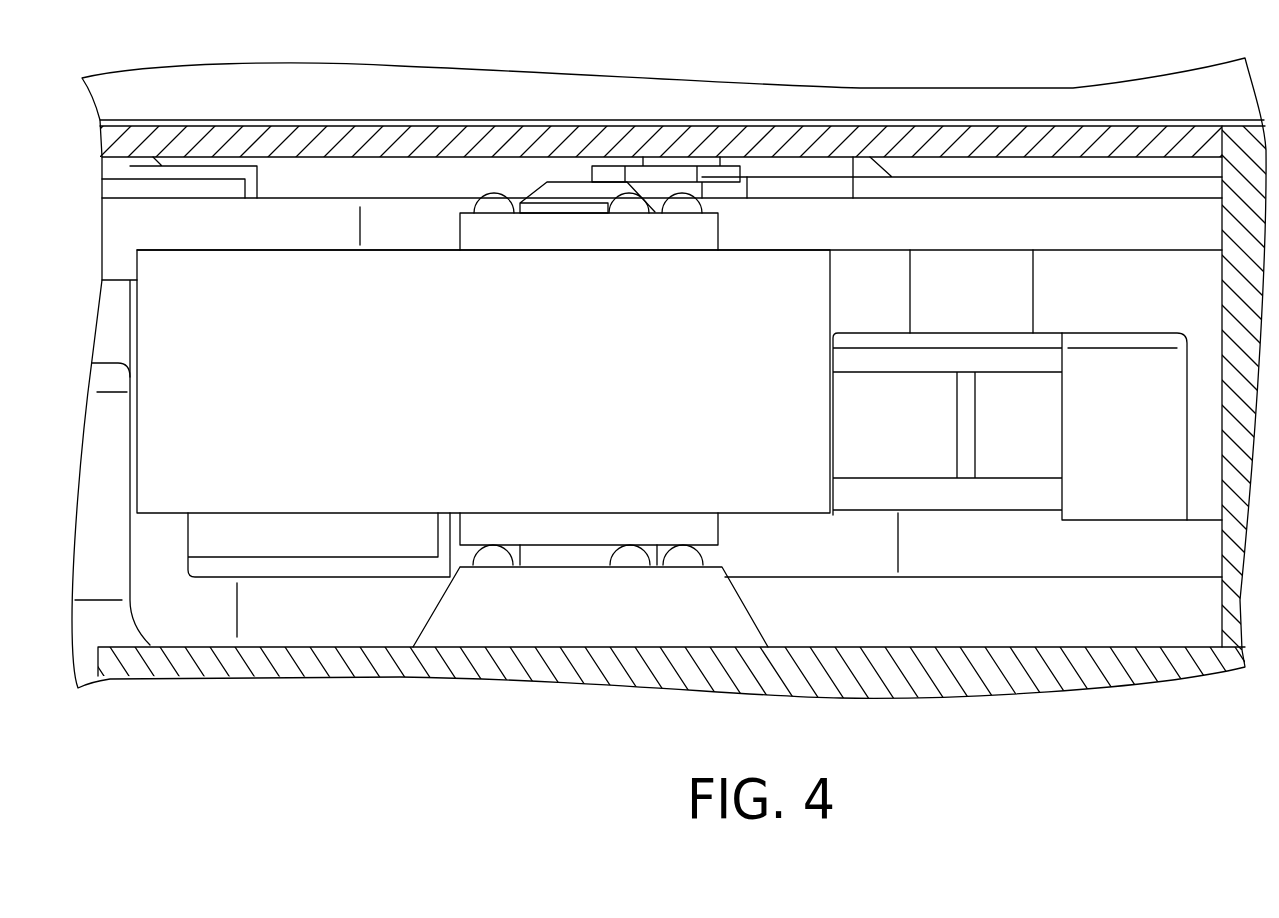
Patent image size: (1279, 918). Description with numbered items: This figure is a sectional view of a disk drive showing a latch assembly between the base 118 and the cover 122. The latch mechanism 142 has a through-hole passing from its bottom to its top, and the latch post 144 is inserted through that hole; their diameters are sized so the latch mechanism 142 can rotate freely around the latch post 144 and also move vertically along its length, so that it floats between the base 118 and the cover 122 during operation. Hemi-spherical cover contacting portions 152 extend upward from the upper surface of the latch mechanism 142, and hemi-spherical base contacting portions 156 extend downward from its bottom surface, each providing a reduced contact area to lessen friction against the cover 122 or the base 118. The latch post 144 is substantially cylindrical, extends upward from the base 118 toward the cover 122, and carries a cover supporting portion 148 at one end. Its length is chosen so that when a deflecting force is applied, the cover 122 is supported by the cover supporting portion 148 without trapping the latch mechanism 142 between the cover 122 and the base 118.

The base 118 is at (427, 663).
The cover 122 is at (870, 157).
The latch mechanism 142 is at (430, 392).
The latch post 144 is at (583, 165).
The cover supporting portion 148 is at (565, 190).
The cover contacting portions 152 is at (498, 207).
The base contacting portions 156 is at (495, 552).